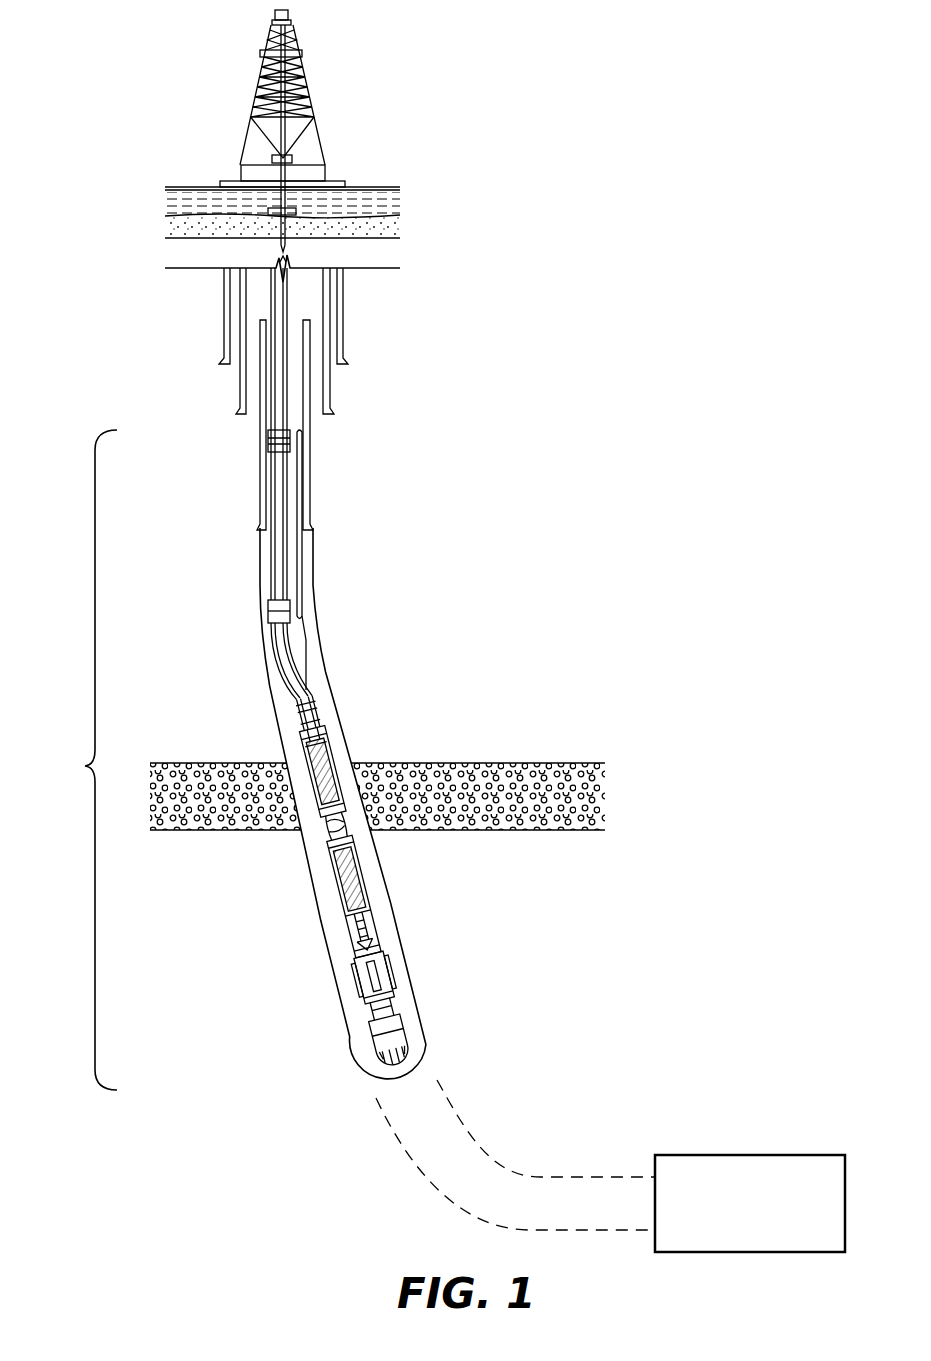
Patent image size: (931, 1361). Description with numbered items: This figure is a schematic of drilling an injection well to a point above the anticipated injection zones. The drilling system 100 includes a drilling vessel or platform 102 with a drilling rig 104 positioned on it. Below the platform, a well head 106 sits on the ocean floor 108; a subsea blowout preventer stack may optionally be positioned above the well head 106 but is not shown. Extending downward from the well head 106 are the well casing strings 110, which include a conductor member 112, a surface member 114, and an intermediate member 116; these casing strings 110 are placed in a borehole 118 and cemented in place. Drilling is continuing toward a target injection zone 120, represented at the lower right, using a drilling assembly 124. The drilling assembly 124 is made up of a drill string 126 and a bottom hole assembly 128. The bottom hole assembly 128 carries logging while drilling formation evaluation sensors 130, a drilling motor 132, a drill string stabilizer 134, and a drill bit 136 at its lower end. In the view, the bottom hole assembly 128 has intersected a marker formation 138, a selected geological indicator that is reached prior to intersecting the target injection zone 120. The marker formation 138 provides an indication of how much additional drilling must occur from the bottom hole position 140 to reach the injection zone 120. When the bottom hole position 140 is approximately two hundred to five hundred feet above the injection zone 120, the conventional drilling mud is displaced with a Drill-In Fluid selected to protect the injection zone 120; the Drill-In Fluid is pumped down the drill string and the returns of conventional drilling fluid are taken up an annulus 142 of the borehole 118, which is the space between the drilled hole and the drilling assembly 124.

The drilling system 100 is at (523, 170).
The drilling vessel or platform 102 is at (332, 178).
The drilling rig 104 is at (300, 91).
The well head 106 is at (272, 208).
The ocean floor 108 is at (180, 218).
The well casing strings 110 is at (208, 323).
The conductor member 112 is at (344, 340).
The surface member 114 is at (330, 392).
The intermediate member 116 is at (310, 440).
The borehole 118 is at (263, 683).
The target injection zone 120 is at (795, 1157).
The drilling assembly 124 is at (352, 610).
The drill string 126 is at (288, 300).
The bottom hole assembly 128 is at (78, 760).
The logging while drilling formation evaluation sensors 130 is at (262, 490).
The drilling motor 132 is at (316, 731).
The drill string stabilizer 134 is at (390, 976).
The drill bit 136 is at (410, 1051).
The marker formation 138 is at (458, 764).
The bottom hole position 140 is at (425, 1090).
The annulus 142 is at (316, 887).